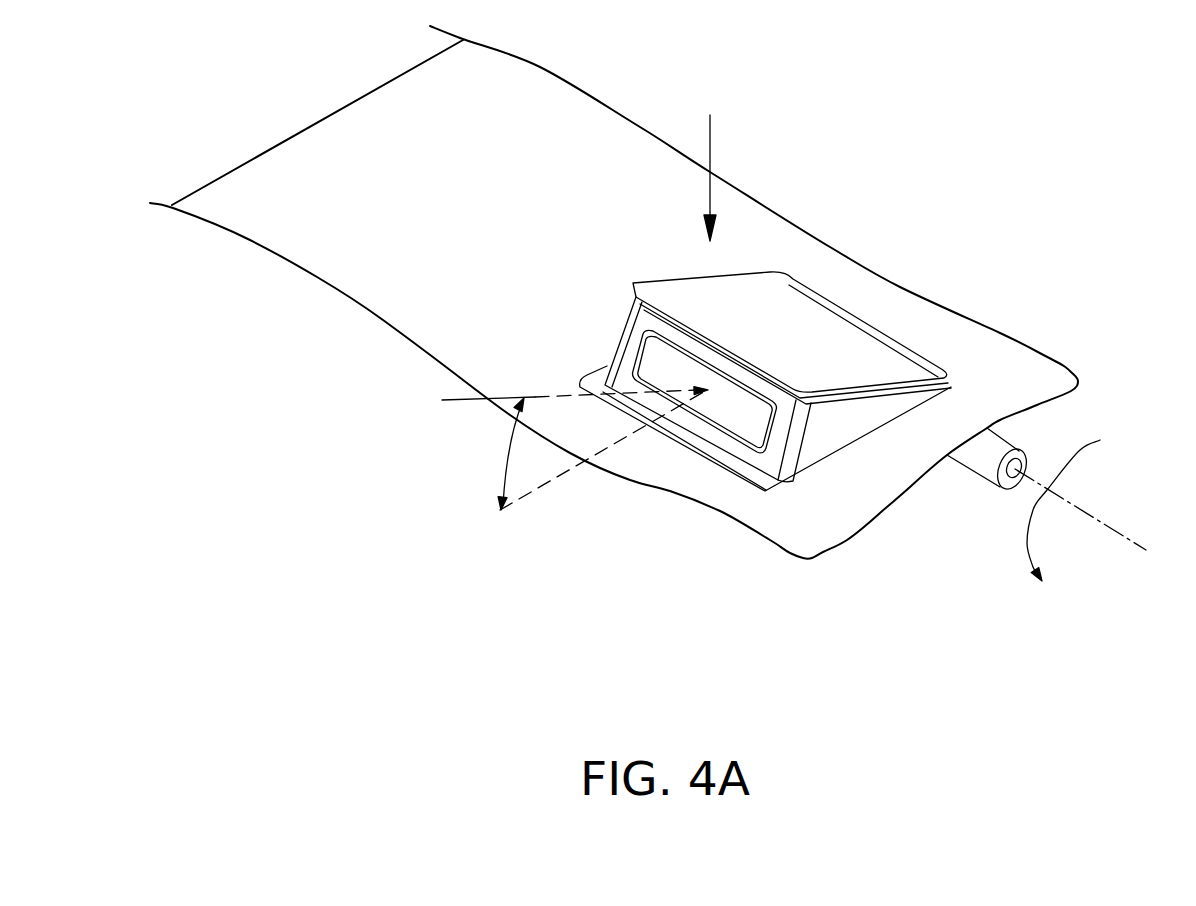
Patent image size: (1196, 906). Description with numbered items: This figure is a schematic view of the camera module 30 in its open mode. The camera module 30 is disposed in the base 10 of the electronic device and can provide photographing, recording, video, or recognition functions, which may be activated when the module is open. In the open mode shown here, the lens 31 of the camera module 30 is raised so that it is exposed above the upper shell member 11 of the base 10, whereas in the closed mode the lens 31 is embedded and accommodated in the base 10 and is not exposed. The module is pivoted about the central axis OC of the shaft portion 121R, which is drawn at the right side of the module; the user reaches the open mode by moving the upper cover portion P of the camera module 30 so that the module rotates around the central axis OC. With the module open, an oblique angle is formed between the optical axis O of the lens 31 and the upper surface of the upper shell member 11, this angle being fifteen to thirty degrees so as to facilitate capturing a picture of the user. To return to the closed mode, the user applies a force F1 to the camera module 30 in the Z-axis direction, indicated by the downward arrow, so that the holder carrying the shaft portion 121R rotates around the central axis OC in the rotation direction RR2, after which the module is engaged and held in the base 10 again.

The base 10 is at (346, 72).
The upper shell member 11 is at (288, 160).
The camera module 30 is at (737, 270).
The lens 31 is at (663, 363).
The upper cover portion P is at (828, 337).
The force F1 is at (710, 162).
The optical axis O is at (565, 447).
The shaft portion 121R is at (986, 470).
The central axis OC is at (1101, 519).
The rotation direction RR2 is at (1063, 526).